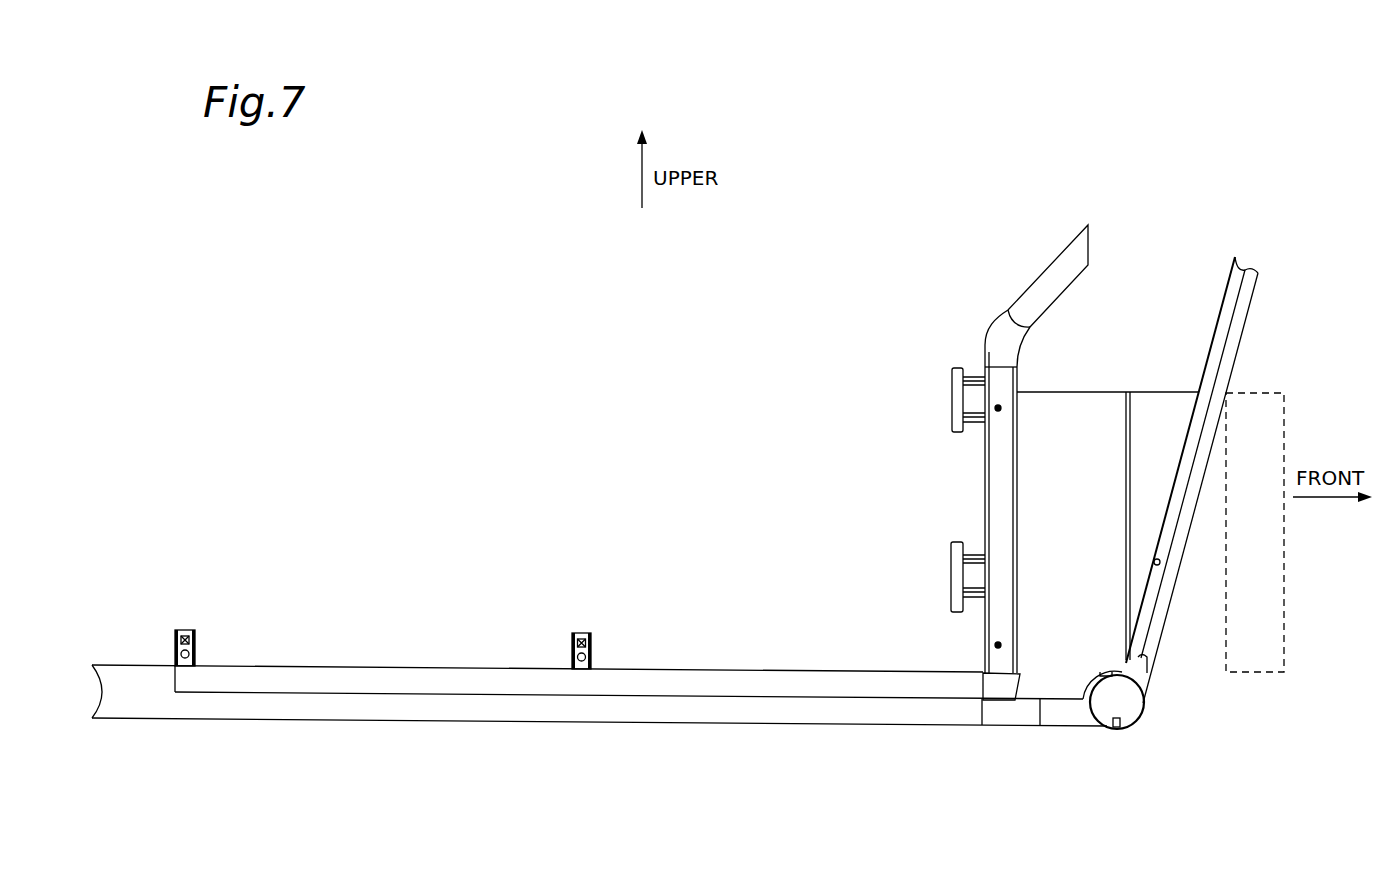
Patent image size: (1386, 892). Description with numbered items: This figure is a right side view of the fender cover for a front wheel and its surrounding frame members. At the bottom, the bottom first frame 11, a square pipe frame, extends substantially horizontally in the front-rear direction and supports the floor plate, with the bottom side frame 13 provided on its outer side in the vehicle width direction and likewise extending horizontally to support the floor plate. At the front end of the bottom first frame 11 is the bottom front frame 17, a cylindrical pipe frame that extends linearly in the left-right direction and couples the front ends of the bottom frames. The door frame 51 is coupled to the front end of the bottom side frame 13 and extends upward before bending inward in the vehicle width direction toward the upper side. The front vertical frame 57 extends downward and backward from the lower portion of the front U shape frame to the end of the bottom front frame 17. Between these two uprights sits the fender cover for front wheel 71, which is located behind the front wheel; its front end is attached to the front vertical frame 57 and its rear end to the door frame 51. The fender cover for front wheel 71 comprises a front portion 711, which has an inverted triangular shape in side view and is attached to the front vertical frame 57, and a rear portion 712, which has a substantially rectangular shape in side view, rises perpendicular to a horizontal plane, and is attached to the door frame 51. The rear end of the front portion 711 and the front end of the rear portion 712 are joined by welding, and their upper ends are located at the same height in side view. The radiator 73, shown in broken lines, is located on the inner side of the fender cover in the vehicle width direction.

The bottom first frame 11 is at (410, 704).
The bottom side frame 13 is at (594, 680).
The bottom front frame 17 is at (1117, 728).
The door frame 51 is at (1000, 575).
The front vertical frame 57 is at (1182, 508).
The fender cover for front wheel 71 is at (1108, 421).
The front portion 711 is at (1163, 422).
The rear portion 712 is at (1063, 422).
The radiator 73 is at (1253, 655).